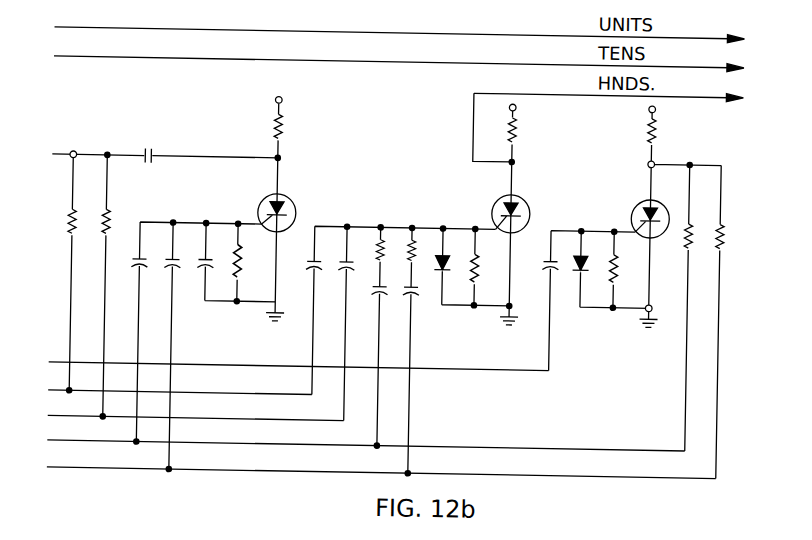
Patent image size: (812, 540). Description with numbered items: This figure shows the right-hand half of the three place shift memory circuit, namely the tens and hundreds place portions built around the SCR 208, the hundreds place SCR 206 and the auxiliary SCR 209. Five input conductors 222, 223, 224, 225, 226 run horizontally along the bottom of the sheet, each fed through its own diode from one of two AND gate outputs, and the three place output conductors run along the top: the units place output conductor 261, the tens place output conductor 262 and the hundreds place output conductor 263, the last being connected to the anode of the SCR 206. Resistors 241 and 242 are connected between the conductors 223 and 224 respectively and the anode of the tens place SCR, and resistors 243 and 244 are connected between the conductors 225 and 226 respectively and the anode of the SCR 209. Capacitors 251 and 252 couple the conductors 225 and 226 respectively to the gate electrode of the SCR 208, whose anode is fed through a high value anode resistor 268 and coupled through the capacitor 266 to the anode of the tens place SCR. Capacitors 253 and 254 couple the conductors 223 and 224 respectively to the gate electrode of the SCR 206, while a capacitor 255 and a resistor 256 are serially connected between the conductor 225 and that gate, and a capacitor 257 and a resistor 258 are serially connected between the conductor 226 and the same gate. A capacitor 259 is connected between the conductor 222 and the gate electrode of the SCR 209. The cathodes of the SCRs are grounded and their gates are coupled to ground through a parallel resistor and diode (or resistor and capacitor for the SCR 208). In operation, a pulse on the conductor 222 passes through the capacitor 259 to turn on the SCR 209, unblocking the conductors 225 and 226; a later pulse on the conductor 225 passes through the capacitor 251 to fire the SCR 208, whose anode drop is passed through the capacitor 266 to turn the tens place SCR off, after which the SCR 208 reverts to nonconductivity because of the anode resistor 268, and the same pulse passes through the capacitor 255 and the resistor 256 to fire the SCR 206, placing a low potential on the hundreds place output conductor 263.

The units place output conductor 261 is at (340, 25).
The tens place output conductor 262 is at (340, 54).
The hundreds place output conductor 263 is at (545, 84).
The capacitor 266 is at (154, 149).
The anode resistor 268 is at (285, 122).
The SCR 208 is at (264, 199).
The SCR 206 is at (497, 213).
The auxiliary SCR 209 is at (636, 206).
The resistor 241 is at (72, 221).
The resistor 242 is at (106, 221).
The resistor 243 is at (689, 227).
The resistor 244 is at (726, 228).
The capacitor 251 is at (137, 264).
The capacitor 252 is at (172, 260).
The capacitor 253 is at (316, 262).
The capacitor 254 is at (344, 257).
The capacitor 255 is at (382, 283).
The resistor 256 is at (382, 238).
The capacitor 257 is at (421, 289).
The resistor 258 is at (416, 238).
The capacitor 259 is at (555, 257).
The conductor 222 is at (242, 360).
The conductor 223 is at (242, 388).
The conductor 224 is at (242, 413).
The conductor 225 is at (242, 438).
The conductor 226 is at (242, 465).